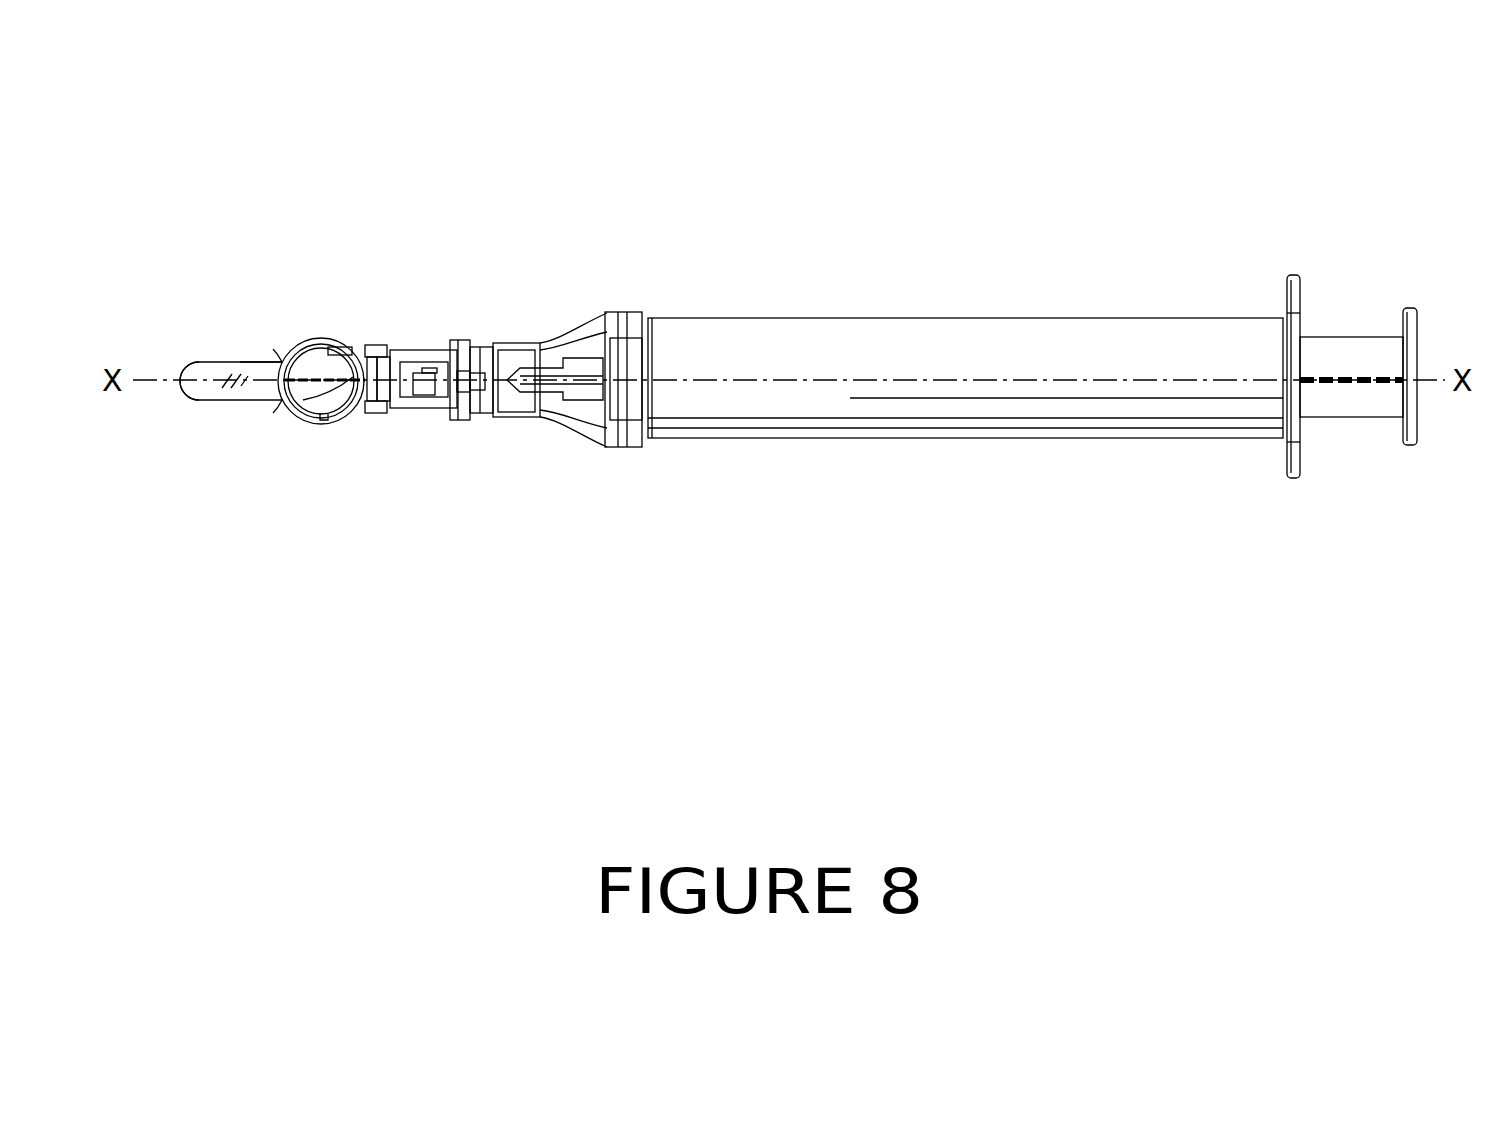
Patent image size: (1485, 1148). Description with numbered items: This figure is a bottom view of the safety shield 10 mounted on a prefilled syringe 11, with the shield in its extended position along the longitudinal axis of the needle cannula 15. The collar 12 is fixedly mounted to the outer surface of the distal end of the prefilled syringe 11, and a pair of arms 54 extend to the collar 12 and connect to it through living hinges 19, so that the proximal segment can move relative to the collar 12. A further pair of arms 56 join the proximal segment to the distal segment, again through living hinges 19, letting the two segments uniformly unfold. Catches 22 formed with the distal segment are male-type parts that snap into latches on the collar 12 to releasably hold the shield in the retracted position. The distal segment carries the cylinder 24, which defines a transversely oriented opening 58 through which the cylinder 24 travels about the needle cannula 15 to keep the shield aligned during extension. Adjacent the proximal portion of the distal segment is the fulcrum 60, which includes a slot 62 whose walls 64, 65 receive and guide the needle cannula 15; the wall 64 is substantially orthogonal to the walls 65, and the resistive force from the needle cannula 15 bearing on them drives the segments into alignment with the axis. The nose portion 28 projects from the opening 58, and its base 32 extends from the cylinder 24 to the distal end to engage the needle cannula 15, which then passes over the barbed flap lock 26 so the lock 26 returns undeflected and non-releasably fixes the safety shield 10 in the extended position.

The safety shield 10 is at (470, 252).
The prefilled syringe 11 is at (1032, 357).
The collar 12 is at (658, 440).
The needle cannula 15 is at (320, 378).
The living hinges 19 is at (610, 313).
The catches 22 is at (367, 345).
The cylinder 24 is at (313, 428).
The barbed flap lock 26 is at (409, 410).
The nose portion 28 is at (183, 388).
The base 32 is at (197, 383).
The arms 54 is at (582, 313).
The arms 56 is at (468, 340).
The opening 58 is at (328, 347).
The fulcrum 60 is at (277, 362).
The slot 62 is at (423, 347).
The wall 64 is at (365, 417).
The walls 65 is at (380, 347).